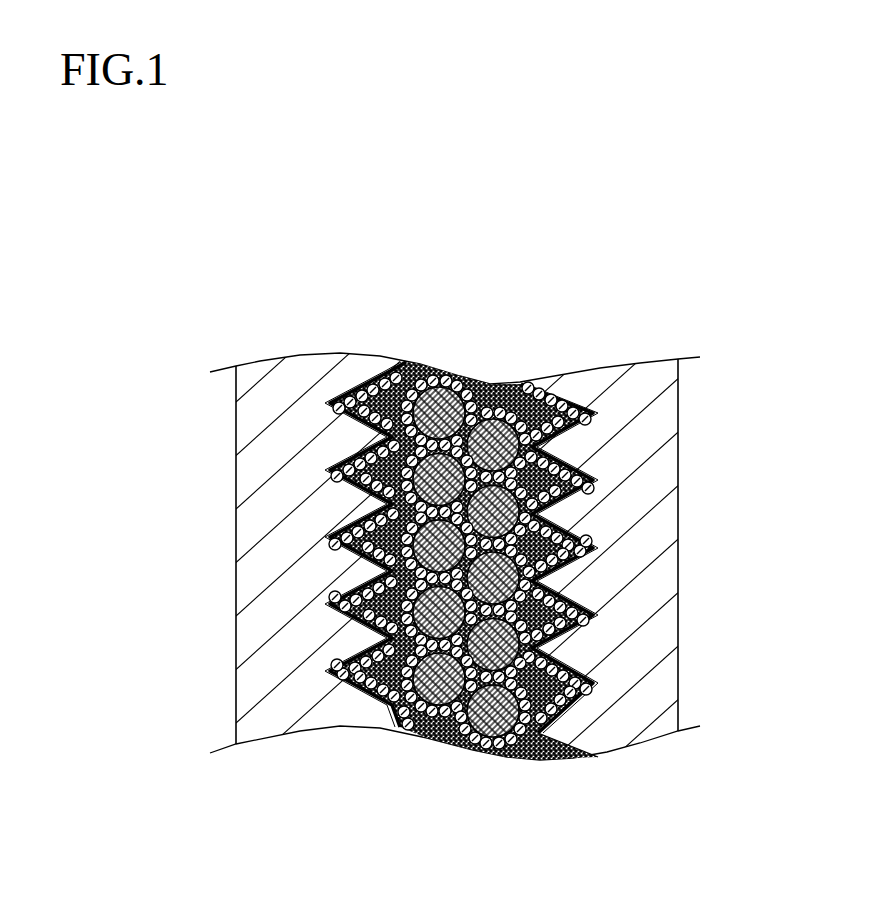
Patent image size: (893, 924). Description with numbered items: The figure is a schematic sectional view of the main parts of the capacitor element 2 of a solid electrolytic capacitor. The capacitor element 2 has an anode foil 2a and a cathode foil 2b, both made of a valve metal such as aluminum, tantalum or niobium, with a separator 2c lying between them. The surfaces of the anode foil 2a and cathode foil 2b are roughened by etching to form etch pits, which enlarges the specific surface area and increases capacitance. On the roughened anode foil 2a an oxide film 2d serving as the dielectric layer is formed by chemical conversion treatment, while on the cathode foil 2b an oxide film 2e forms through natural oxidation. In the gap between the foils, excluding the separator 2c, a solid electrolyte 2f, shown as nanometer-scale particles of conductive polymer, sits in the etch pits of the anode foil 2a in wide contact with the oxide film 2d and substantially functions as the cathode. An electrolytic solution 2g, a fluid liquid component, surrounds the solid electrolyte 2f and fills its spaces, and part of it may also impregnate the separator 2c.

The capacitor element 2 is at (677, 282).
The anode foil 2a is at (313, 523).
The cathode foil 2b is at (616, 579).
The separator 2c is at (461, 597).
The oxide film 2d is at (438, 576).
The oxide film 2e is at (599, 755).
The solid electrolyte 2f is at (461, 592).
The electrolytic solution 2g is at (464, 593).